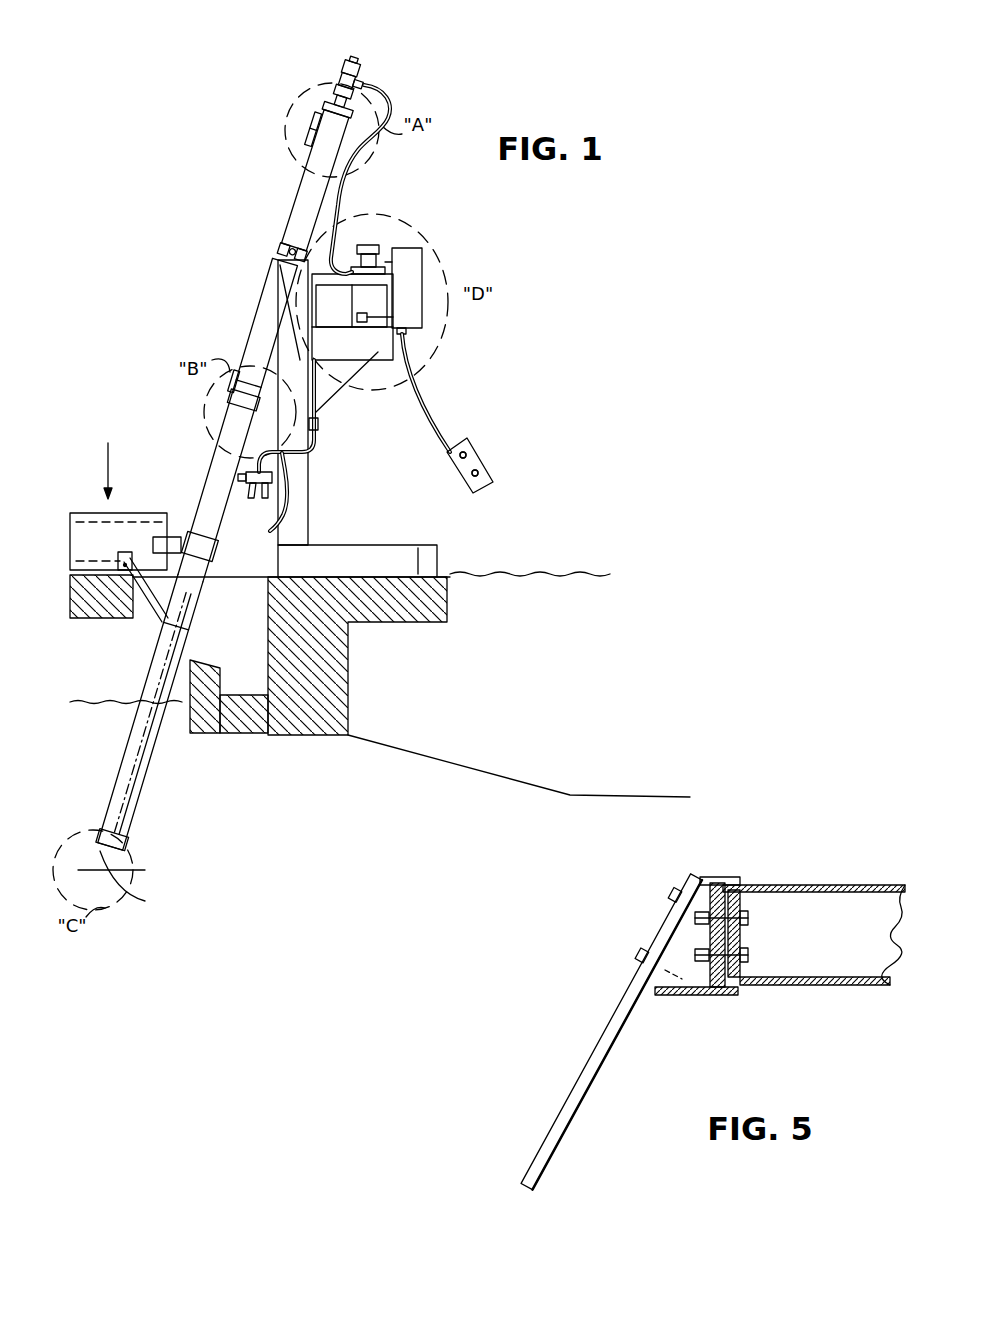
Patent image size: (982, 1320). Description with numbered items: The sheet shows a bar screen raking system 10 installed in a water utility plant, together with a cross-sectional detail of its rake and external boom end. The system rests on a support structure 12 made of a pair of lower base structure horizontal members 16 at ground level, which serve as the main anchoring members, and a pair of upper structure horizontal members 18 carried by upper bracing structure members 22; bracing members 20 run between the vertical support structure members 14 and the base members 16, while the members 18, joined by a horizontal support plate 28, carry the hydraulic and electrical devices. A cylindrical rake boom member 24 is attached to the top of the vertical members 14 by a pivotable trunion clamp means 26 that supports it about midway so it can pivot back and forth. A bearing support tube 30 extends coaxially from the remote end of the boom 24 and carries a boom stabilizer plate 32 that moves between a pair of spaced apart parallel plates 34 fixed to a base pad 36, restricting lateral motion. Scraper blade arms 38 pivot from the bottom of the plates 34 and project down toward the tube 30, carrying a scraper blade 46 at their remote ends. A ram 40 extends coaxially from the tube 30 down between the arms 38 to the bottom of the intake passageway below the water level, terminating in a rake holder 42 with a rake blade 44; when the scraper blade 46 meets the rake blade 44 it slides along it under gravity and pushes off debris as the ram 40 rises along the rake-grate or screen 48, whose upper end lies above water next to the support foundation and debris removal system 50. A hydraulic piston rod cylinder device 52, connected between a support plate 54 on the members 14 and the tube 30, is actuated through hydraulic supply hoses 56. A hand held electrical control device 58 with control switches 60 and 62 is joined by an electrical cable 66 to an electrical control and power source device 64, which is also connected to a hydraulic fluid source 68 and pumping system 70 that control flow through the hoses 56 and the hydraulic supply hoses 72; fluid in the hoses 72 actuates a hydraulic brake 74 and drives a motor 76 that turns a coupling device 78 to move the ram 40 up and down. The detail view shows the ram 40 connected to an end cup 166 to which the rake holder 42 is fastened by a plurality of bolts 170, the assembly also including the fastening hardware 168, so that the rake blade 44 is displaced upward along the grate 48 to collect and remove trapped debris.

In FIG. 1, the bar screen raking system 10 is at (248, 326).
In FIG. 1, the support structure 12 is at (347, 436).
In FIG. 1, the vertical support structure members 14 is at (305, 477).
In FIG. 1, the lower base structure horizontal members 16 is at (420, 560).
In FIG. 1, the upper structure horizontal members 18 is at (379, 354).
In FIG. 1, the bracing members 20 is at (332, 545).
In FIG. 1, the upper bracing structure members 22 is at (347, 385).
In FIG. 1, the cylindrical rake boom member 24 is at (300, 190).
In FIG. 1, the pivotable trunion clamp means 26 is at (286, 248).
In FIG. 1, the horizontal support plate 28 is at (312, 313).
In FIG. 1, the bearing support tube 30 is at (216, 460).
In FIG. 1, the boom stabilizer plate 32 is at (176, 534).
In FIG. 1, the spaced apart parallel plates 34 is at (72, 528).
In FIG. 1, the base pad 36 is at (95, 620).
In FIG. 1, the scraper blade arms 38 is at (157, 602).
In FIG. 1, the ram 40 is at (136, 740).
In FIG. 5, the ram 40 is at (792, 885).
In FIG. 1, the rake holder 42 is at (125, 851).
In FIG. 5, the rake holder 42 is at (716, 883).
In FIG. 1, the rake blade 44 is at (146, 901).
In FIG. 5, the rake blade 44 is at (641, 1021).
In FIG. 1, the scraper blade 46 is at (177, 630).
In FIG. 1, the rake-grate or screen 48 is at (168, 733).
In FIG. 1, the support foundation and debris removal system 50 is at (356, 631).
In FIG. 1, the hydraulic piston rod cylinder device 52 is at (258, 498).
In FIG. 1, the support plate 54 is at (284, 508).
In FIG. 1, the hydraulic supply hoses 56 is at (316, 450).
In FIG. 1, the hand held electrical control device 58 is at (489, 470).
In FIG. 1, the control switch 60 is at (469, 440).
In FIG. 1, the control switch 62 is at (470, 479).
In FIG. 1, the electrical control and power source device 64 is at (412, 270).
In FIG. 1, the electrical cable 66 is at (433, 397).
In FIG. 1, the hydraulic fluid source 68 is at (362, 301).
In FIG. 1, the pumping system 70 is at (373, 245).
In FIG. 1, the hydraulic supply hoses 72 is at (326, 230).
In FIG. 1, the hydraulic brake 74 is at (349, 61).
In FIG. 1, the motor 76 is at (343, 80).
In FIG. 1, the coupling device 78 is at (332, 98).
In FIG. 5, the end cup 166 is at (720, 1006).
In FIG. 5, the bolts 168 is at (748, 956).
In FIG. 5, the bolts 170 is at (684, 896).